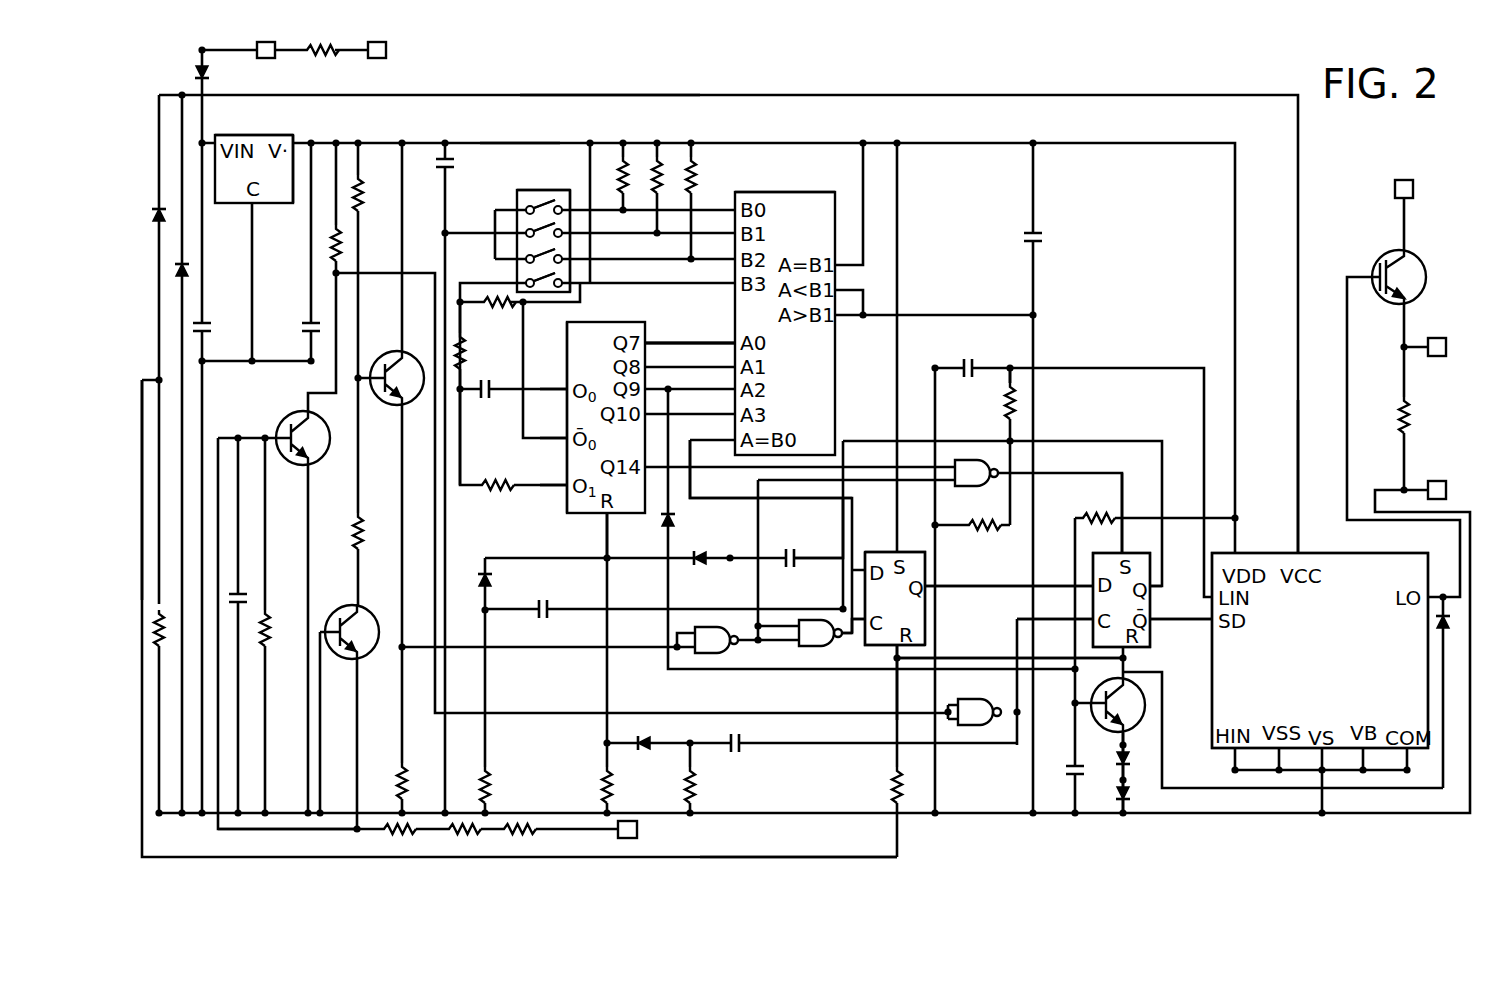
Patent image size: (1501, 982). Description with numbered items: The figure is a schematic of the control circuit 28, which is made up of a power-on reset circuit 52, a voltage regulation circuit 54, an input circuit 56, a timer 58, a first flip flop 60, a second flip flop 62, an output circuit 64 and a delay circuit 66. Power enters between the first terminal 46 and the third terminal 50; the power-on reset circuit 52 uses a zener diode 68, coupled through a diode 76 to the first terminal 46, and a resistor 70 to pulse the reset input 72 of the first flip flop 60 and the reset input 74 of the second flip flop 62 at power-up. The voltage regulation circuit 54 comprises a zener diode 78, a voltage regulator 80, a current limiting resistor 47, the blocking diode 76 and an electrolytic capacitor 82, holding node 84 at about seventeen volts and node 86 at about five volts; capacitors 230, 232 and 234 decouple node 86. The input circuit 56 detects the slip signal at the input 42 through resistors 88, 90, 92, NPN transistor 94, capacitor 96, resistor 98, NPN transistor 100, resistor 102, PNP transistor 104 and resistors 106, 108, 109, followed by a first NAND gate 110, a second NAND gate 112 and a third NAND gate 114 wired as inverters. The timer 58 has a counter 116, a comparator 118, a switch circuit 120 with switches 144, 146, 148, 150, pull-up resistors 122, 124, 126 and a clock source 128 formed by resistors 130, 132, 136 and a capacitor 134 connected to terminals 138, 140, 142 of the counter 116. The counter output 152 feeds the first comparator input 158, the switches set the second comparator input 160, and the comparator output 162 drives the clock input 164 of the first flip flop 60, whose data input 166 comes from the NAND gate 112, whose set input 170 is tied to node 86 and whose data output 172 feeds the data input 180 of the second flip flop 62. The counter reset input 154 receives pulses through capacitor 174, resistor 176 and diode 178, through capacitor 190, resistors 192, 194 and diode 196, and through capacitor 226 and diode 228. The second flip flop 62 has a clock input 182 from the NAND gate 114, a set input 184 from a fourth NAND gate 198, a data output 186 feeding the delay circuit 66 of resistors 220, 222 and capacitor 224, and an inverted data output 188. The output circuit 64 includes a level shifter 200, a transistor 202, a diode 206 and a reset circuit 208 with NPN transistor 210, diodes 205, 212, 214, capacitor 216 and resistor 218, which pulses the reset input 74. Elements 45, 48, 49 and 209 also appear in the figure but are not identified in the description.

The control circuit 28 is at (876, 866).
The input 42 is at (638, 836).
The terminal 45 is at (380, 60).
The first terminal 46 is at (262, 60).
The current limiting resistor 47 is at (318, 56).
The terminal 48 is at (1394, 188).
The terminal 49 is at (1440, 337).
The third terminal 50 is at (1437, 480).
The power-on reset circuit 52 is at (155, 362).
The voltage regulation circuit 54 is at (305, 128).
The input circuit 56 is at (342, 840).
The timer 58 is at (537, 178).
The first flip flop 60 is at (928, 628).
The second flip flop 62 is at (1100, 552).
The output circuit 64 is at (1318, 478).
The delay circuit 66 is at (1008, 355).
The zener diode 68 is at (156, 212).
The resistor 70 is at (153, 622).
The reset input 72 is at (890, 665).
The reset input 74 is at (1130, 655).
The blocking diode 76 is at (196, 72).
The zener diode 78 is at (186, 268).
The voltage regulator 80 is at (262, 134).
The electrolytic capacitor 82 is at (206, 322).
The node 84 is at (565, 94).
The node 86 is at (535, 142).
The resistor 88 is at (515, 836).
The resistor 90 is at (453, 836).
The resistor 92 is at (393, 836).
The NPN transistor 94 is at (283, 418).
The capacitor 96 is at (245, 592).
The resistor 98 is at (270, 630).
The NPN transistor 100 is at (336, 610).
The resistor 102 is at (352, 525).
The PNP transistor 104 is at (385, 358).
The resistor 106 is at (341, 244).
The resistor 108 is at (362, 196).
The resistor 109 is at (396, 785).
The first NAND gate 110 is at (712, 655).
The second NAND gate 112 is at (812, 648).
The third NAND gate 114 is at (982, 698).
The counter 116 is at (565, 350).
The comparator 118 is at (792, 190).
The switch circuit 120 is at (545, 190).
The first pull-up resistor 122 is at (618, 168).
The second pull-up resistor 124 is at (660, 168).
The third pull-up resistor 126 is at (695, 168).
The clock source 128 is at (466, 505).
The first resistor 130 is at (465, 348).
The second resistor 132 is at (490, 308).
The capacitor 134 is at (483, 396).
The third resistor 136 is at (482, 494).
The first terminal 138 is at (565, 393).
The second terminal 140 is at (563, 442).
The third terminal 142 is at (565, 490).
The switch 144 is at (528, 280).
The switch 146 is at (528, 256).
The switch 148 is at (528, 230).
The switch 150 is at (528, 208).
The counter output 152 is at (661, 324).
The counter reset input 154 is at (612, 532).
The first comparator input 158 is at (720, 325).
The second comparator input 160 is at (716, 299).
The comparator output 162 is at (728, 445).
The clock input 164 is at (850, 645).
The data input 166 is at (843, 580).
The set input 170 is at (890, 552).
The data output 172 is at (930, 590).
The capacitor 174 is at (550, 603).
The resistor 176 is at (492, 780).
The diode 178 is at (492, 580).
The data input 180 is at (1092, 583).
The clock input 182 is at (1090, 622).
The set input 184 is at (1124, 540).
The data output 186 is at (1152, 590).
The inverted data output 188 is at (1153, 622).
The capacitor 190 is at (742, 750).
The resistor 192 is at (697, 780).
The resistor 194 is at (602, 775).
The diode 196 is at (646, 752).
The fourth NAND gate 198 is at (962, 460).
The level shifter 200 is at (1305, 552).
The transistor 202 is at (1380, 260).
The diode 205 is at (676, 520).
The diode 206 is at (1450, 618).
The reset circuit 208 is at (1144, 798).
The resistor 209 is at (1412, 412).
The NPN transistor 210 is at (1100, 715).
The diode 212 is at (1130, 758).
The diode 214 is at (1130, 800).
The capacitor 216 is at (1068, 790).
The resistor 218 is at (1095, 516).
The resistor 220 is at (1016, 404).
The resistor 222 is at (982, 532).
The capacitor 224 is at (964, 364).
The capacitor 226 is at (788, 566).
The diode 228 is at (703, 566).
The capacitor 230 is at (440, 158).
The capacitor 232 is at (1040, 232).
The capacitor 234 is at (308, 322).